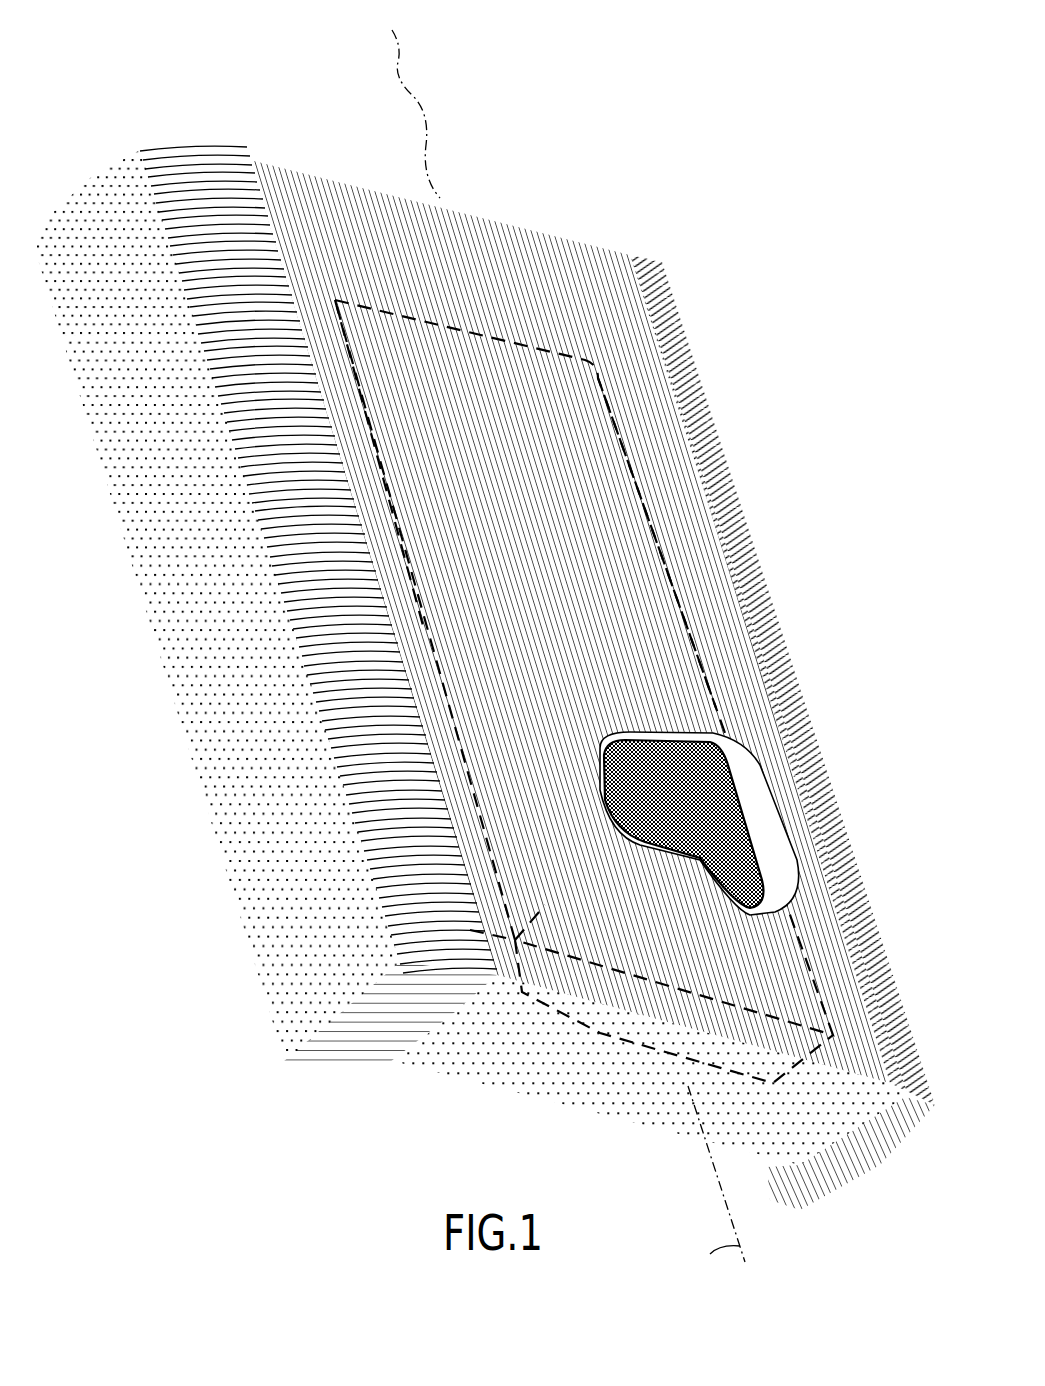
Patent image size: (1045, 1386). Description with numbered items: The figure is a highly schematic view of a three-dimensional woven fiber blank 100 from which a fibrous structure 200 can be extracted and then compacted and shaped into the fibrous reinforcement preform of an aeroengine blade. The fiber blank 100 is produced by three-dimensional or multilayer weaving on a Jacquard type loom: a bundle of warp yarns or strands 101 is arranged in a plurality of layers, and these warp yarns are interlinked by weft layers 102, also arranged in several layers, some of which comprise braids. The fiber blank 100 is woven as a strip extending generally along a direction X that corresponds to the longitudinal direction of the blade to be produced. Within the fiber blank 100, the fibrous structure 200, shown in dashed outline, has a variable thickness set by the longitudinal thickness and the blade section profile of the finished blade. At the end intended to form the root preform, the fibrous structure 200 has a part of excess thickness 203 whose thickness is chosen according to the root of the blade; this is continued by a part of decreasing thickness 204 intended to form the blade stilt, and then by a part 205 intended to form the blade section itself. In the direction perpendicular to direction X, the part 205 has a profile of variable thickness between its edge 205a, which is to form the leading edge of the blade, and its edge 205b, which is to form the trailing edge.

The fiber blank 100 is at (575, 130).
The warp yarns or strands 101 is at (295, 162).
The weft layers 102 is at (262, 940).
The fibrous structure 200 is at (708, 810).
The part of excess thickness 203 is at (520, 1000).
The part of decreasing thickness 204 is at (480, 962).
The part intended to form the blade section 205 is at (735, 650).
The edge intended to form the leading edge 205a is at (330, 738).
The edge intended to form the trailing edge 205b is at (575, 625).